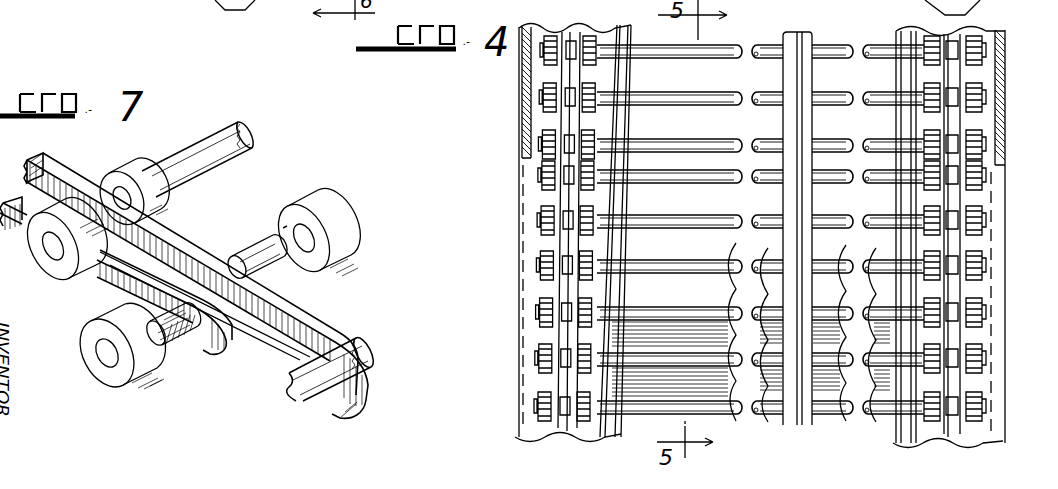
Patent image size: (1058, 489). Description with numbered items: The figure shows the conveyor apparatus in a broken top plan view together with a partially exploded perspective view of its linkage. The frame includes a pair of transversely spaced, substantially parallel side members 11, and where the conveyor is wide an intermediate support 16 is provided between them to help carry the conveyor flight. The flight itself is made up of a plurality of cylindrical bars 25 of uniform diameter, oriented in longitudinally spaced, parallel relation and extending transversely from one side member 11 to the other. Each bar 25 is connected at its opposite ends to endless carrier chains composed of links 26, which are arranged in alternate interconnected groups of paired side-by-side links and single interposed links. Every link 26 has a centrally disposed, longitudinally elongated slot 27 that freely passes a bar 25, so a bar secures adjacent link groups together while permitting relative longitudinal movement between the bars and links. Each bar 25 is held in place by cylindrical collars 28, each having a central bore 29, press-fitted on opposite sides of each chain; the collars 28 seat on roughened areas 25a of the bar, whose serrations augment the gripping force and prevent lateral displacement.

In FIG. 4, the side members 11 is at (520, 85).
In FIG. 4, the intermediate support 16 is at (802, 36).
In FIG. 4, the bars 25 is at (763, 44).
In FIG. 7, the bars 25 is at (257, 135).
In FIG. 7, the roughened areas 25a is at (237, 258).
In FIG. 4, the links 26 is at (952, 130).
In FIG. 7, the links 26 is at (100, 281).
In FIG. 7, the slot 27 is at (280, 340).
In FIG. 4, the collars 28 is at (997, 247).
In FIG. 7, the collars 28 is at (121, 170).
In FIG. 7, the bore 29 is at (282, 222).